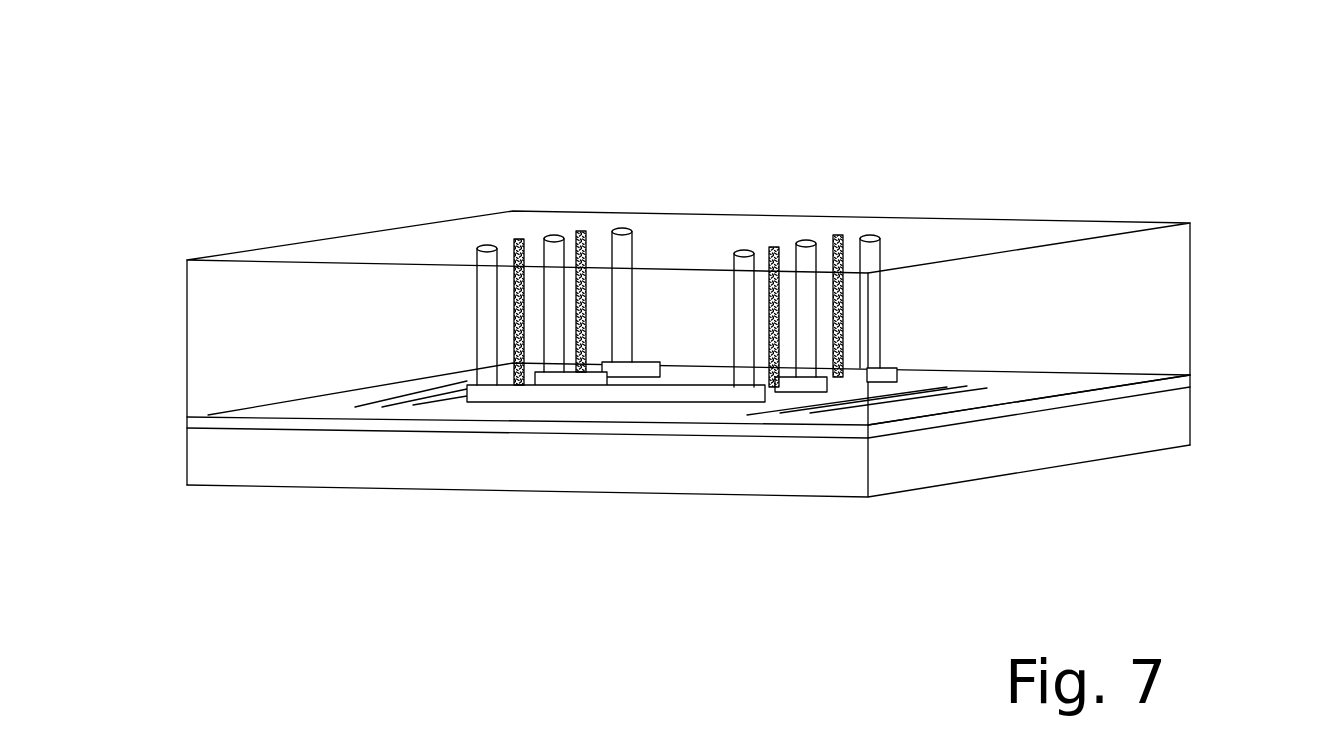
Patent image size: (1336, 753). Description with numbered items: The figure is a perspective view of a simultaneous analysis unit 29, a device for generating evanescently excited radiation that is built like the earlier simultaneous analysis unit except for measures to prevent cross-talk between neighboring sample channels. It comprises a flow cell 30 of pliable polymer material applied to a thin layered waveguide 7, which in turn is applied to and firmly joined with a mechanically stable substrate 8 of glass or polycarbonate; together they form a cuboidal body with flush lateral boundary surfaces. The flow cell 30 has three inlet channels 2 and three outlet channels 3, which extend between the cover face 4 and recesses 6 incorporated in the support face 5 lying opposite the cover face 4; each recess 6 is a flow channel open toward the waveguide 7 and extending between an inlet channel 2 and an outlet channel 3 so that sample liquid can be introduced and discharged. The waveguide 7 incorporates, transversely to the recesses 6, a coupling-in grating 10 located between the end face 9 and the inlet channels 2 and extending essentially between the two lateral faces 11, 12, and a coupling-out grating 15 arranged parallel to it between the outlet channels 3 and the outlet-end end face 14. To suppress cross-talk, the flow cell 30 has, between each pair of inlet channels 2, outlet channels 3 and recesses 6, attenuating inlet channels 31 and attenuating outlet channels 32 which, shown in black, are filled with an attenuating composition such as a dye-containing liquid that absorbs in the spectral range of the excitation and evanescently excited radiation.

The inlet channel 2 is at (632, 246).
The outlet channel 3 is at (880, 252).
The cover face 4 is at (947, 240).
The support face 5 is at (910, 414).
The recess 6 is at (617, 380).
The waveguide 7 is at (1187, 379).
The substrate 8 is at (1178, 423).
The end face 9 is at (180, 340).
The coupling-in grating 10 is at (385, 393).
The lateral face 11 is at (242, 297).
The lateral face 12 is at (1063, 210).
The outlet-end end face 14 is at (1160, 311).
The coupling-out grating 15 is at (965, 399).
The simultaneous analysis unit 29 is at (1140, 190).
The flow cell 30 is at (1193, 243).
The attenuating inlet channel 31 is at (510, 238).
The attenuating outlet channel 32 is at (768, 250).